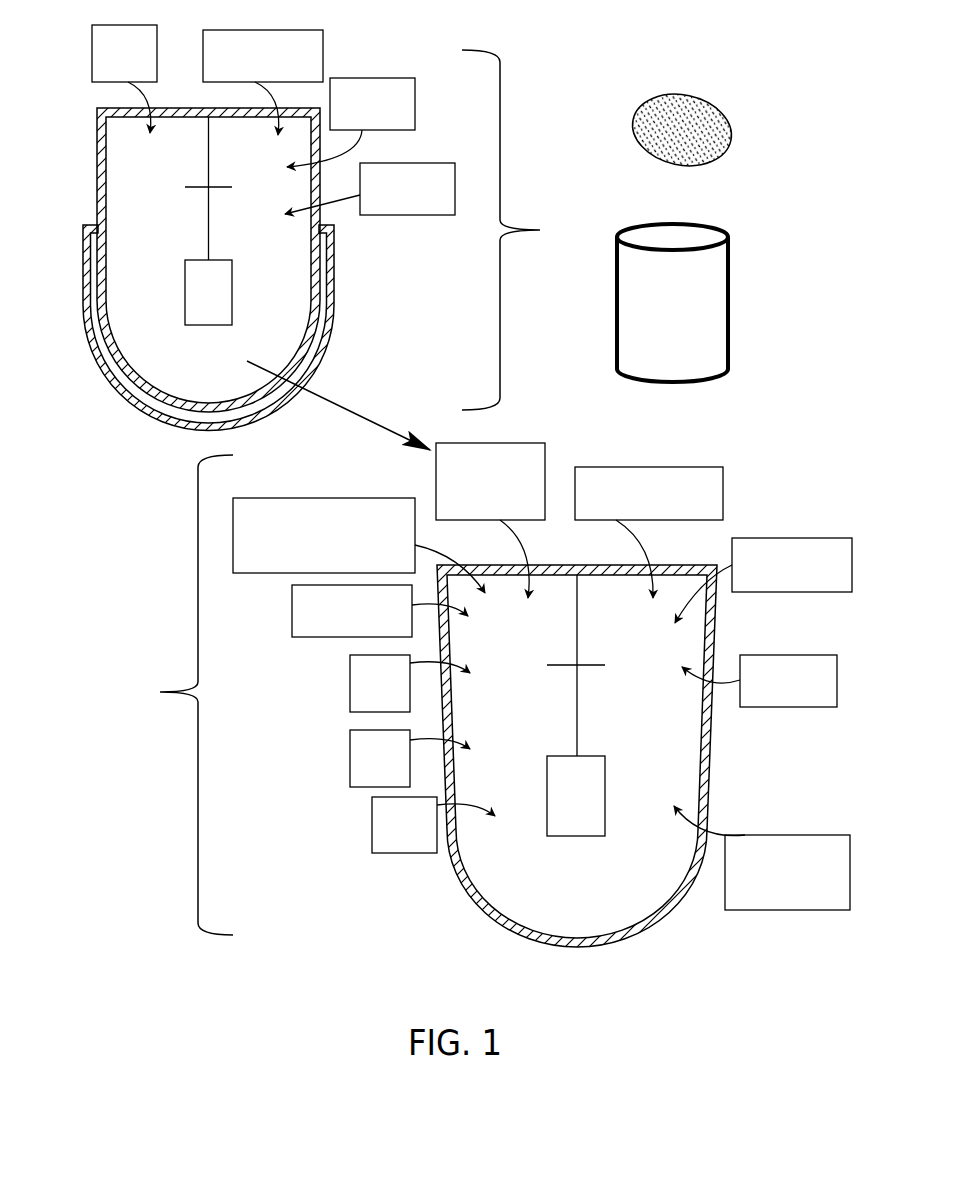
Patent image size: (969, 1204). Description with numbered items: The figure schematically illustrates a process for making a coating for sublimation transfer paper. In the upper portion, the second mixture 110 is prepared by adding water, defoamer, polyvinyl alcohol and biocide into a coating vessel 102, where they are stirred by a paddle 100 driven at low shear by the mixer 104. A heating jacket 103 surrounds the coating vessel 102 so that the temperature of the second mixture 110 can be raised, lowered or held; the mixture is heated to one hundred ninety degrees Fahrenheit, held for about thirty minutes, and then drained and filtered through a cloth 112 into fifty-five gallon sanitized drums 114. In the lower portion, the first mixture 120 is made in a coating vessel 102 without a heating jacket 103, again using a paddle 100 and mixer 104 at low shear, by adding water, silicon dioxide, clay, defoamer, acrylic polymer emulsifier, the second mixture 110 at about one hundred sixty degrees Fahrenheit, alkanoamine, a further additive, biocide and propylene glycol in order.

The paddle 100 is at (193, 278).
The coating vessel 102 is at (98, 195).
The heating jacket 103 is at (107, 375).
The mixer 104 is at (210, 222).
The second mixture 110 is at (340, 217).
The cloth 112 is at (683, 92).
The drums 114 is at (697, 298).
The first mixture 120 is at (481, 689).